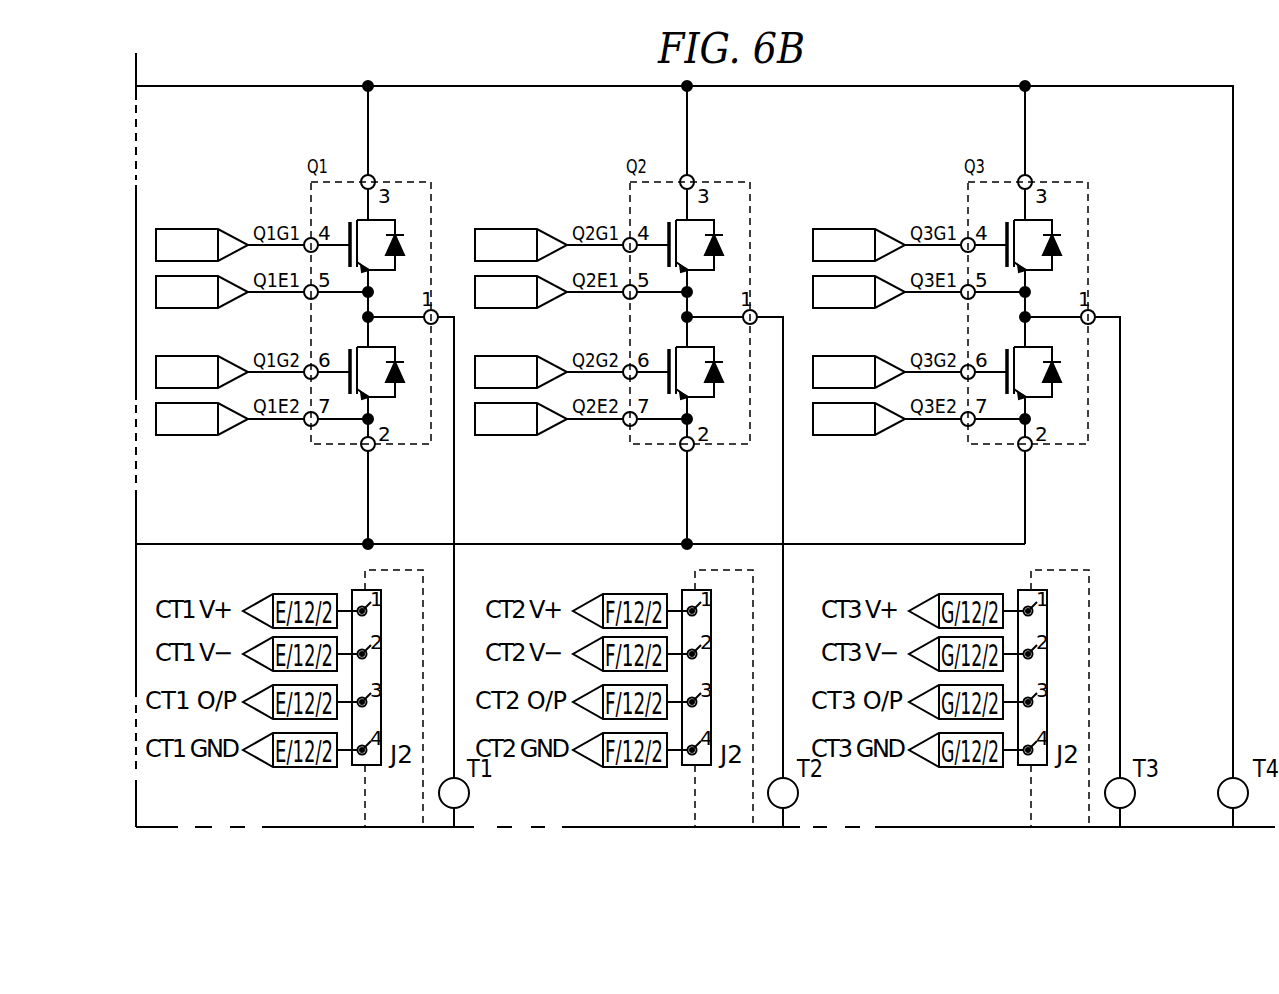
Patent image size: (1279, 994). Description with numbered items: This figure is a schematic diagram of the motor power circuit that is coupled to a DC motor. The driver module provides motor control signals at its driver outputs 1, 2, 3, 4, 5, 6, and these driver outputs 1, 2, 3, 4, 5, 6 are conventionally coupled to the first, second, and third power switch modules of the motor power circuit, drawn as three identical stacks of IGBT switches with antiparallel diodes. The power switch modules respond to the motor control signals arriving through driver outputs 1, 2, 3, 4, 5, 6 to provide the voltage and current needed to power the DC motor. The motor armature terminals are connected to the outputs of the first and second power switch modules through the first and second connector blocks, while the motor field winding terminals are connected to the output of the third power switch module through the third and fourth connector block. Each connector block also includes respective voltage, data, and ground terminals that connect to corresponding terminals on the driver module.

The driver output 1 is at (202, 245).
The driver output 2 is at (202, 420).
The driver output 3 is at (521, 245).
The driver output 4 is at (521, 420).
The driver output 5 is at (859, 245).
The driver output 6 is at (859, 420).